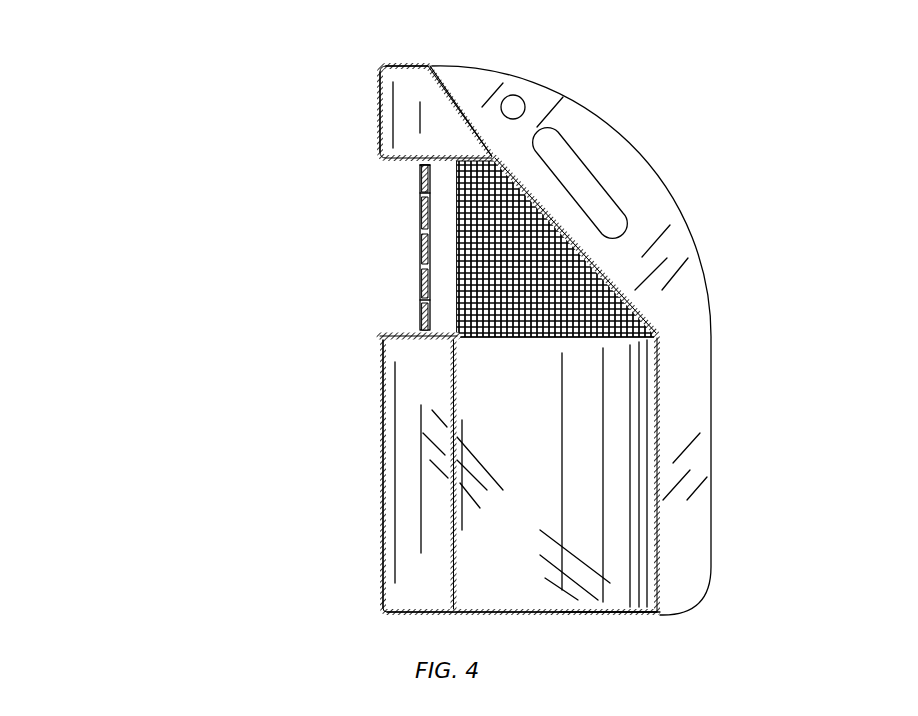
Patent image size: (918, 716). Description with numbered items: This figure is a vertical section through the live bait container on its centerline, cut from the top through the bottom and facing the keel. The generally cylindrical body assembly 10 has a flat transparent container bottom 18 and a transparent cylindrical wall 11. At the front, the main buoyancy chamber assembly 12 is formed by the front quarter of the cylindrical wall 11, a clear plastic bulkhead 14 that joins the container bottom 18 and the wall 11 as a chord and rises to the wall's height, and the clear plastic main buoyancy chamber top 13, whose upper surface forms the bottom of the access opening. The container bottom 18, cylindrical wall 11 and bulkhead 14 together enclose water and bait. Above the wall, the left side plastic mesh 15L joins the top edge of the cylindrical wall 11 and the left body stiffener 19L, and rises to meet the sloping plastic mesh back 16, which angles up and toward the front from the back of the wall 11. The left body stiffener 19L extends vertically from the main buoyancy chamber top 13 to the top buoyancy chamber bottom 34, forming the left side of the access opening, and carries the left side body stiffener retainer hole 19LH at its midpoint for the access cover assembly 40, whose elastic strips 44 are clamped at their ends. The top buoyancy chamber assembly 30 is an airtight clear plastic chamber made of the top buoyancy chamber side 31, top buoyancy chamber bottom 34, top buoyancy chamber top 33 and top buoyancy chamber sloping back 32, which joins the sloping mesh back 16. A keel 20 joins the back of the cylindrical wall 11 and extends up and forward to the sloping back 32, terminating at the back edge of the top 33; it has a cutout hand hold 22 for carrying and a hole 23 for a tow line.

The cylindrical body assembly 10 is at (664, 438).
The cylindrical wall 11 is at (382, 480).
The main buoyancy chamber assembly 12 is at (443, 379).
The main buoyancy chamber top 13 is at (408, 340).
The bulkhead 14 is at (448, 578).
The left side plastic mesh 15L is at (640, 315).
The sloping plastic mesh back 16 is at (610, 280).
The container bottom 18 is at (570, 613).
The left body stiffener 19L is at (422, 250).
The left side body stiffener retainer hole 19LH is at (445, 246).
The keel 20 is at (673, 210).
The hand hold 22 is at (592, 163).
The hole 23 is at (525, 98).
The top buoyancy chamber assembly 30 is at (376, 83).
The top buoyancy chamber side 31 is at (381, 128).
The top buoyancy chamber sloping back 32 is at (500, 150).
The top buoyancy chamber top 33 is at (386, 64).
The top buoyancy chamber bottom 34 is at (420, 167).
The access cover assembly 40 is at (418, 301).
The elastic strips 44 is at (423, 193).